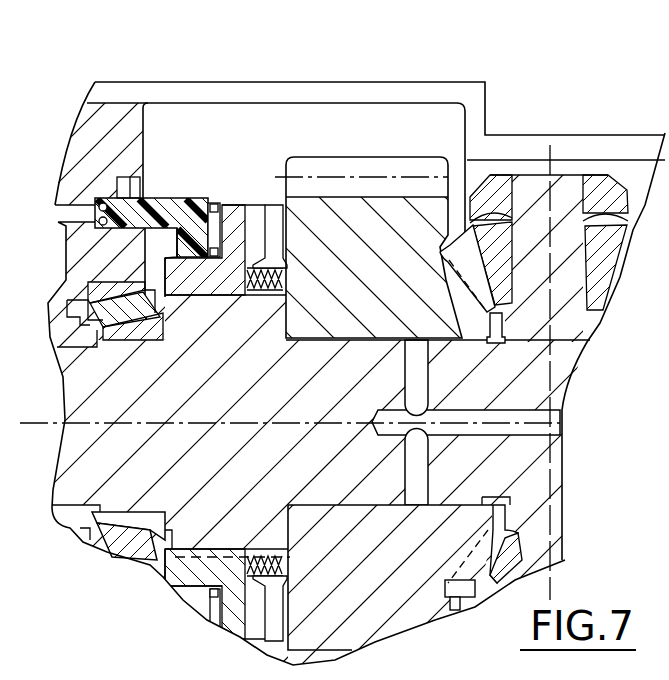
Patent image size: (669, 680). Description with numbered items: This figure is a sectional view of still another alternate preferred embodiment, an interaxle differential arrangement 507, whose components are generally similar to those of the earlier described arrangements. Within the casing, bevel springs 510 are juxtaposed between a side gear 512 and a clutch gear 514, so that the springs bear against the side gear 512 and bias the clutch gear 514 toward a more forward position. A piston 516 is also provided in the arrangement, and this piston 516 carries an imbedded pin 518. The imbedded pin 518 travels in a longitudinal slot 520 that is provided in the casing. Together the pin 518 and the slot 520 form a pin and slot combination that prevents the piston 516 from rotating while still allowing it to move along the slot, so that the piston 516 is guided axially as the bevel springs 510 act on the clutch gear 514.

The interaxle differential arrangement 507 is at (321, 66).
The bevel springs 510 is at (266, 300).
The side gear 512 is at (385, 157).
The clutch gear 514 is at (238, 200).
The piston 516 is at (185, 193).
The imbedded pin 518 is at (143, 180).
The longitudinal slot 520 is at (150, 182).